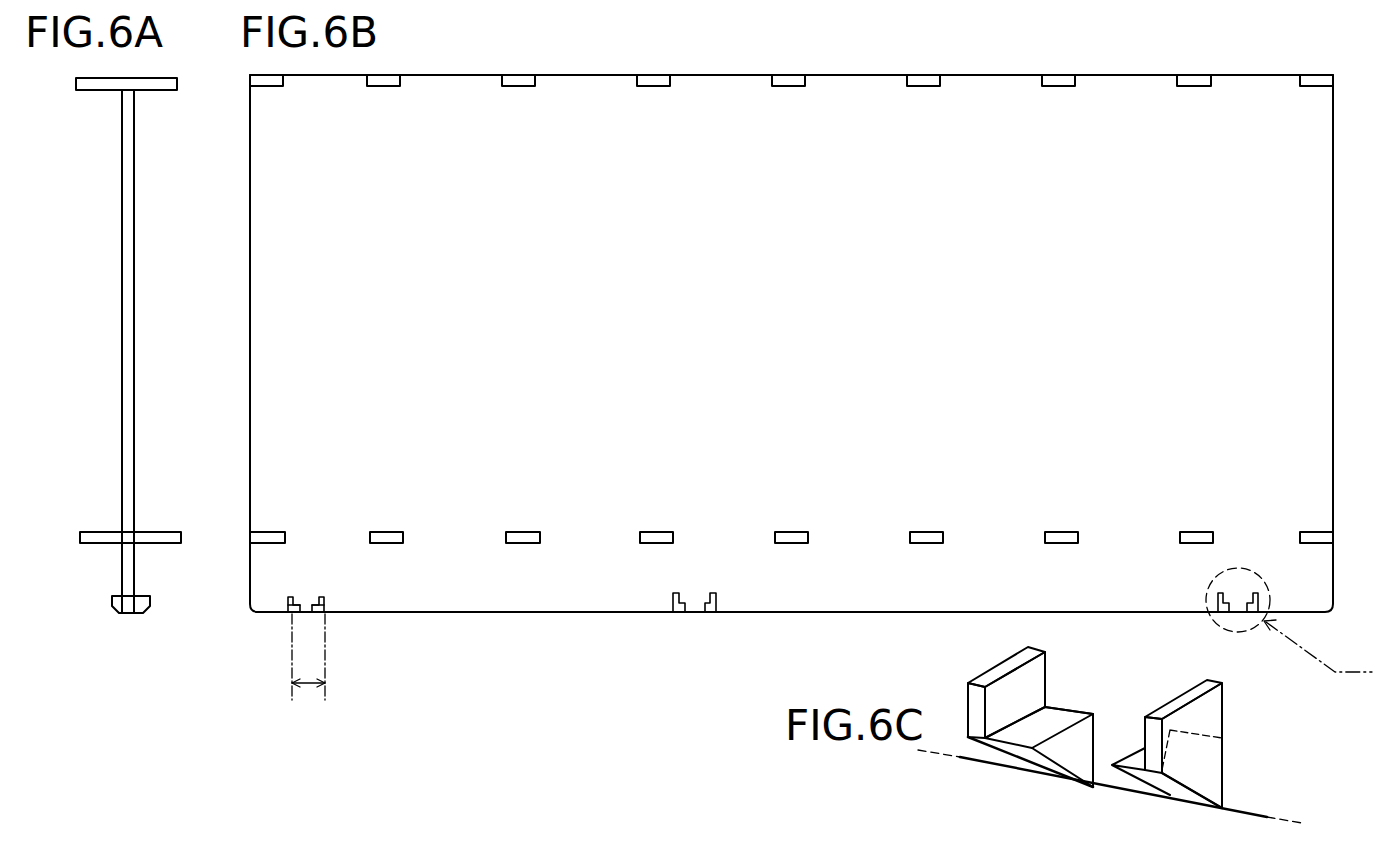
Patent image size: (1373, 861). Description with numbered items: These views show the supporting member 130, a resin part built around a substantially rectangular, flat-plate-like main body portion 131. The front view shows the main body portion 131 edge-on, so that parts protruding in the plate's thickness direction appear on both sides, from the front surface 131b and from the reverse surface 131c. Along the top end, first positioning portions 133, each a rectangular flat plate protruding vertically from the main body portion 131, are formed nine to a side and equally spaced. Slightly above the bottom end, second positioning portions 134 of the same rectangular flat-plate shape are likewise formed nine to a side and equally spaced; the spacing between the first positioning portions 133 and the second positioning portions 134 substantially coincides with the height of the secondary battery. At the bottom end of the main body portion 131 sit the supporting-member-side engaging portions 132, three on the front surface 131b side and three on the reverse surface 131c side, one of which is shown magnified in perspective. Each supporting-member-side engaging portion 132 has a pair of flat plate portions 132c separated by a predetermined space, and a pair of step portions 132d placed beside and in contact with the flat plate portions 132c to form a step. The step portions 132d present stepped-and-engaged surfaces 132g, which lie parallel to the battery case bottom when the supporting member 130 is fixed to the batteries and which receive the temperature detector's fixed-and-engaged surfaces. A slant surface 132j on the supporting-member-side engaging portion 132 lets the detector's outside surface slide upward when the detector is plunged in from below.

In FIG. 6A, the supporting member 130 is at (124, 394).
In FIG. 6B, the supporting member 130 is at (774, 380).
In FIG. 6A, the main body portion 131 is at (122, 213).
In FIG. 6A, the front surface 131b is at (122, 138).
In FIG. 6A, the reverse surface 131c is at (135, 328).
In FIG. 6A, the supporting-member-side engaging portion 132 is at (112, 601).
In FIG. 6C, the supporting-member-side engaging portion 132 is at (1129, 733).
In FIG. 6B, the flat plate portion 132c is at (288, 600).
In FIG. 6C, the flat plate portion 132c is at (997, 670).
In FIG. 6B, the step portion 132d is at (289, 614).
In FIG. 6C, the step portion 132d is at (1063, 753).
In FIG. 6C, the stepped-and-engaged surface 132g is at (1140, 757).
In FIG. 6C, the slant surface 132j is at (1015, 753).
In FIG. 6A, the first positioning portion 133 is at (90, 91).
In FIG. 6B, the first positioning portion 133 is at (512, 84).
In FIG. 6A, the second positioning portion 134 is at (94, 534).
In FIG. 6B, the second positioning portion 134 is at (510, 543).